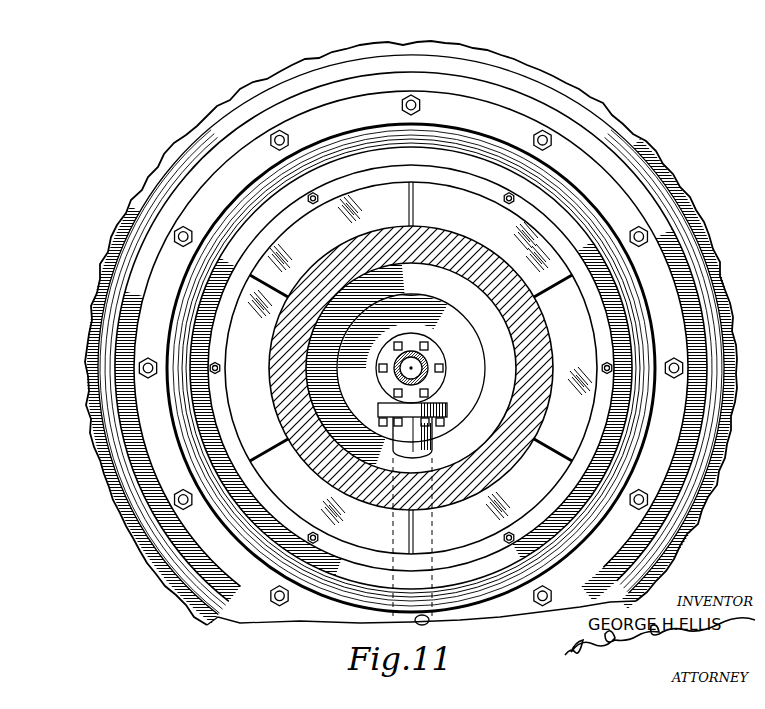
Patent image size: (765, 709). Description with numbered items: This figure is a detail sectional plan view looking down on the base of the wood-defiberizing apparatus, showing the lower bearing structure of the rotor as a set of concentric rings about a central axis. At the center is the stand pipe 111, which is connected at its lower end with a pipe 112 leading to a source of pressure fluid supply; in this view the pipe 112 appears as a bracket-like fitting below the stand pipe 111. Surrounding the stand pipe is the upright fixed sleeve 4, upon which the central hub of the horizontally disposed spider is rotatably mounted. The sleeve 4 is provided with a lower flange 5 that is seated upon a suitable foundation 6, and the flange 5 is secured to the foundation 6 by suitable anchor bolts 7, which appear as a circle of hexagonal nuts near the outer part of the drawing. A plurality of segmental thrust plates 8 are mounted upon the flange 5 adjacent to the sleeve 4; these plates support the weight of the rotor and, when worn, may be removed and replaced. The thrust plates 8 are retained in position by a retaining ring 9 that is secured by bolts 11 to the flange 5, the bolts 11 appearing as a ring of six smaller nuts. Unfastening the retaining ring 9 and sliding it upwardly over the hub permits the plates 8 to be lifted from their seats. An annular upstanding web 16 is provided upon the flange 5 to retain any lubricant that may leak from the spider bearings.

The upright fixed sleeve 4 is at (533, 432).
The lower flange 5 is at (690, 272).
The foundation 6 is at (618, 139).
The anchor bolts 7 is at (400, 107).
The segmental thrust plates 8 is at (302, 233).
The retaining ring 9 is at (549, 223).
The bolts 11 is at (315, 192).
The annular upstanding web 16 is at (652, 332).
The stand pipe 111 is at (428, 362).
The pipe 112 is at (433, 447).